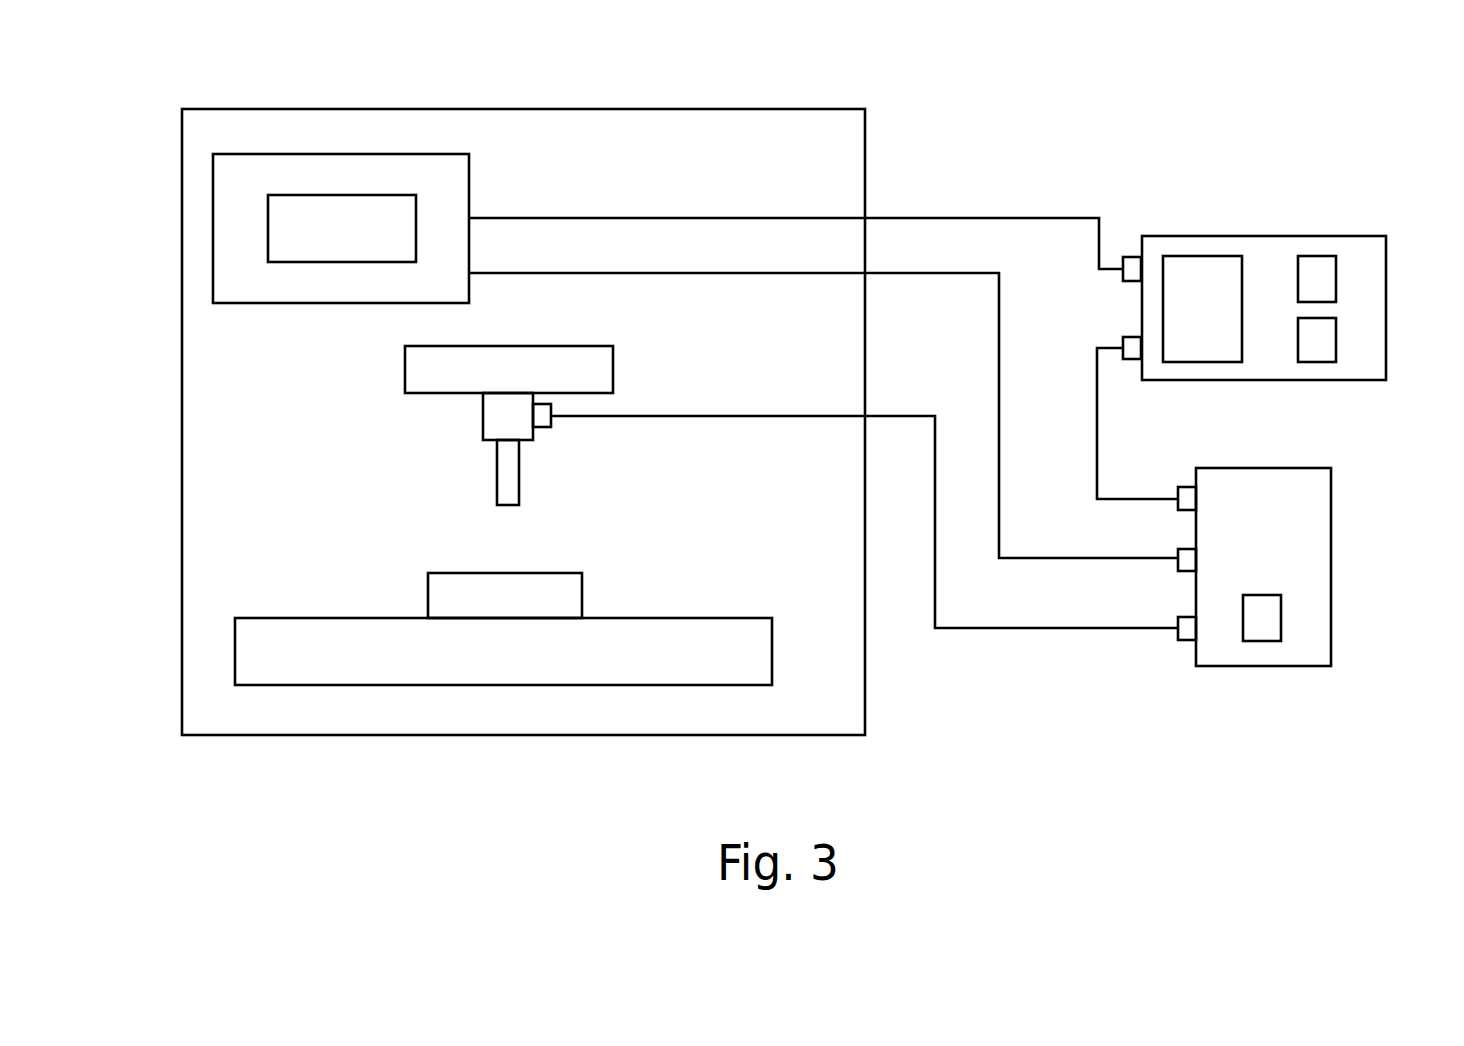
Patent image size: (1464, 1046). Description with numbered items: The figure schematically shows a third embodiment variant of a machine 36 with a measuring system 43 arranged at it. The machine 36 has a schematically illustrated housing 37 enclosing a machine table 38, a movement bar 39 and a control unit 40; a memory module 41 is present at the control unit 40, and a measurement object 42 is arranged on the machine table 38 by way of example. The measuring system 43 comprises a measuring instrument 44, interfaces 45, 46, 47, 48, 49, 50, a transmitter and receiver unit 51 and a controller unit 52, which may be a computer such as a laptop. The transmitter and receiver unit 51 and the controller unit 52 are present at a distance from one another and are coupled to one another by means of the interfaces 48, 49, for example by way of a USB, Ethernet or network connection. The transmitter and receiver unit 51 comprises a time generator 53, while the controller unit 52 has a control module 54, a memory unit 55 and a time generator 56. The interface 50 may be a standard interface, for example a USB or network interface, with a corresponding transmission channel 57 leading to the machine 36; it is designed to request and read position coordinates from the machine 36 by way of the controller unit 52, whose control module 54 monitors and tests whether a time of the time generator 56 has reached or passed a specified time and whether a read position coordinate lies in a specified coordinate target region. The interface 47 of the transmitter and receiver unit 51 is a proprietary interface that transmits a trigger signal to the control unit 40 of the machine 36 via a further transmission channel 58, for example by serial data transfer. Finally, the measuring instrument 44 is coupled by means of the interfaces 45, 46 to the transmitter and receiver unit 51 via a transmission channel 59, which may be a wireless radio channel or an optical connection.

The machine 36 is at (234, 788).
The housing 37 is at (182, 688).
The machine table 38 is at (470, 685).
The movement bar 39 is at (405, 367).
The control unit 40 is at (213, 250).
The memory module 41 is at (353, 195).
The measurement object 42 is at (428, 583).
The measuring system 43 is at (964, 758).
The measuring instrument 44 is at (483, 400).
The interface 45 is at (540, 427).
The interface 46 is at (1187, 640).
The interface 47 is at (1187, 549).
The interface 48 is at (1187, 487).
The interface 49 is at (1133, 337).
The interface 50 is at (1133, 257).
The transmitter and receiver unit 51 is at (1331, 567).
The controller unit 52 is at (1268, 236).
The time generator 53 is at (1281, 620).
The control module 54 is at (1205, 256).
The memory unit 55 is at (1336, 342).
The time generator 56 is at (1336, 282).
The transmission channel 57 is at (975, 218).
The transmission channel 58 is at (916, 274).
The transmission channel 59 is at (960, 628).